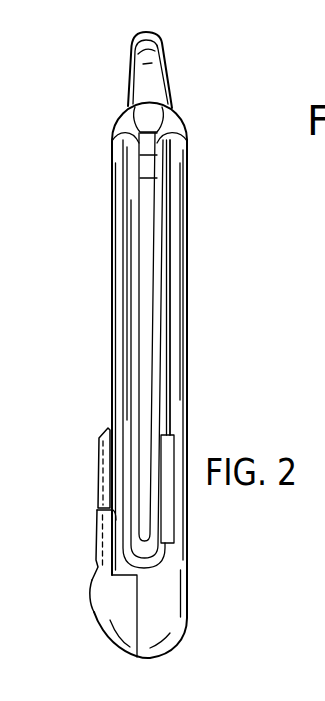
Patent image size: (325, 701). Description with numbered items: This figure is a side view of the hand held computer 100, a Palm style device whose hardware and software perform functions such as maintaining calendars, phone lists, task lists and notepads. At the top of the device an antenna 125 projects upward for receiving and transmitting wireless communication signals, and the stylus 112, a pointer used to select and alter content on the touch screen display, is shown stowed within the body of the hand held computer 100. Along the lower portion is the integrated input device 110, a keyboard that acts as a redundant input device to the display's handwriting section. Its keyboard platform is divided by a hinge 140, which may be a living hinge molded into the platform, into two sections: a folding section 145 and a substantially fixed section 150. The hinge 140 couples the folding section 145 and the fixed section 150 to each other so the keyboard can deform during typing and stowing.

The hand held computer 100 is at (197, 121).
The input device 110 is at (197, 620).
The stylus 112 is at (148, 262).
The antenna 125 is at (155, 72).
The hinge 140 is at (100, 508).
The folding section 145 is at (105, 431).
The substantially fixed section 150 is at (96, 546).